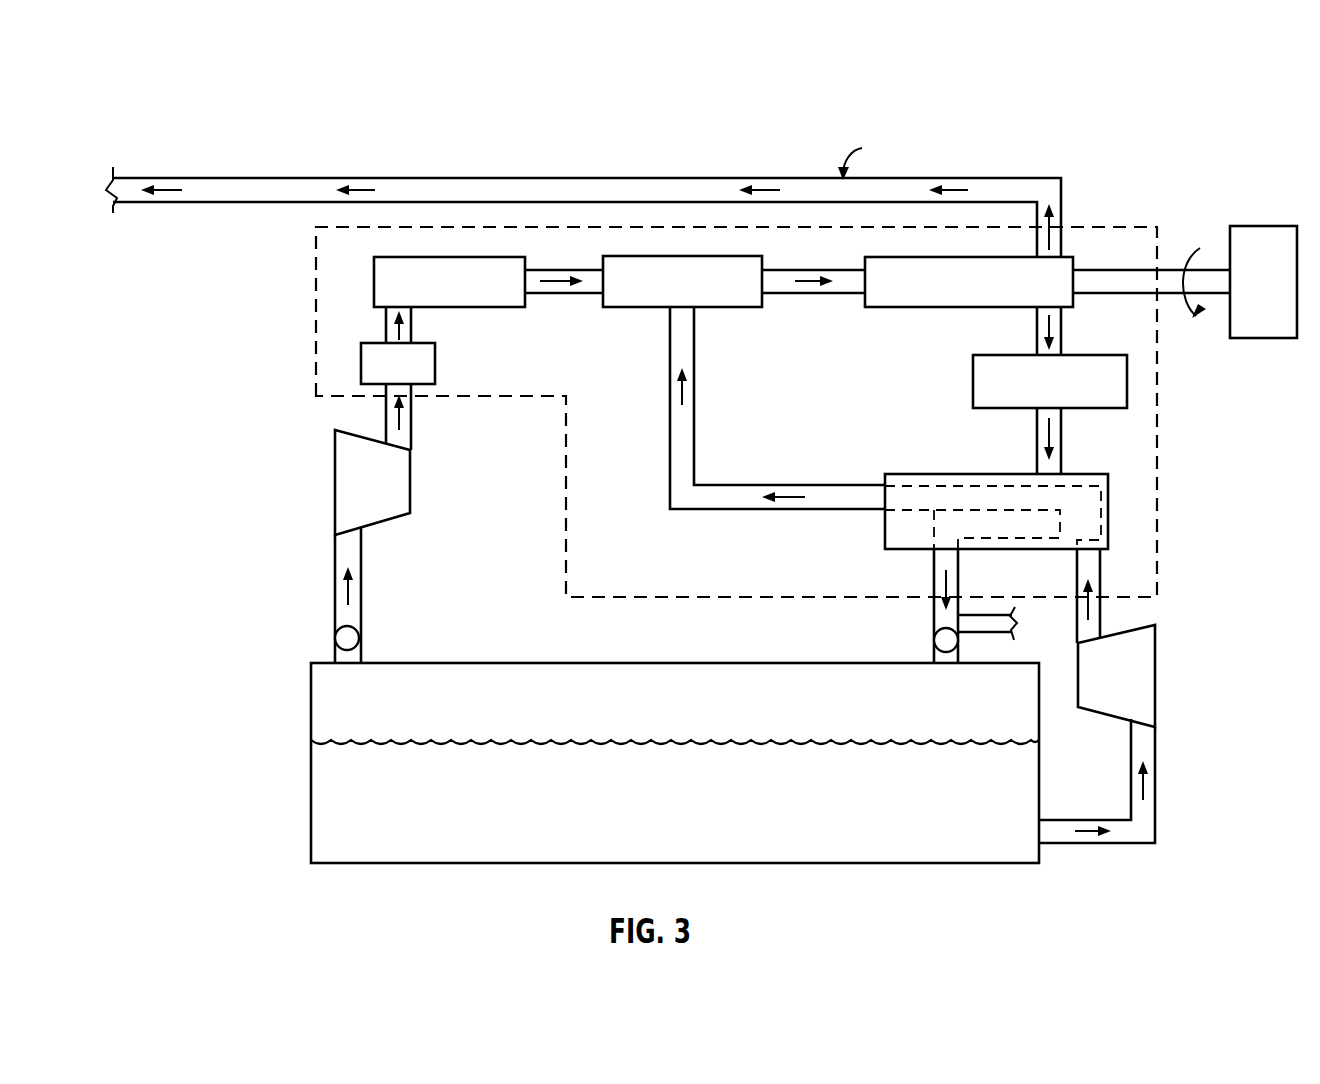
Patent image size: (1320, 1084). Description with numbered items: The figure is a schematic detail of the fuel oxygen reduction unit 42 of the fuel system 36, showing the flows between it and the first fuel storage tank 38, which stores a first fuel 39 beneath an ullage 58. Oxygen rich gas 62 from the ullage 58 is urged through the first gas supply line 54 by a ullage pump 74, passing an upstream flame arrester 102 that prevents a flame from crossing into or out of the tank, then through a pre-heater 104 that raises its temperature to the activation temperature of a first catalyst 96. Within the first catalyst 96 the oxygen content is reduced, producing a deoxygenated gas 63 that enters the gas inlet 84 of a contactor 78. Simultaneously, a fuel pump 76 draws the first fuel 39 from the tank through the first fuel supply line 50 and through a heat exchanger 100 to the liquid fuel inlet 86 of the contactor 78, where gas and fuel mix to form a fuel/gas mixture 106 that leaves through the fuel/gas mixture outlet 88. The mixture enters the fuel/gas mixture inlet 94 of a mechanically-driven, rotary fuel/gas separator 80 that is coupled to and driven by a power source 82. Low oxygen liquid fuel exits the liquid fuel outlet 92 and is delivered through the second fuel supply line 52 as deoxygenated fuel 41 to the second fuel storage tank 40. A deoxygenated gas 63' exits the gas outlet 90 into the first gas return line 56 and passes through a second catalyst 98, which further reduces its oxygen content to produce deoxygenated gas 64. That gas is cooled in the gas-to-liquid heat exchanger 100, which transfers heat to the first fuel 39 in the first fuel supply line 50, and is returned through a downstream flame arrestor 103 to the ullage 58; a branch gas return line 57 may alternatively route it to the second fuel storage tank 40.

The fuel system 36 is at (822, 90).
The first fuel storage tank 38 is at (860, 863).
The first fuel 39 is at (682, 395).
The second fuel storage tank 40 is at (167, 178).
The deoxygenated fuel 41 is at (360, 178).
The fuel oxygen reduction unit 42 is at (548, 218).
The first fuel supply line 50 is at (1155, 800).
The second fuel supply line 52 is at (658, 178).
The first gas supply line 54 is at (358, 560).
The first gas return line 56 is at (934, 565).
The branch gas return line 57 is at (990, 628).
The ullage 58 is at (484, 672).
The oxygen rich gas 62 is at (412, 328).
The deoxygenated gas 63 is at (564, 258).
The deoxygenated gas 63' is at (1014, 333).
The deoxygenated gas 64 is at (1040, 428).
The ullage pump 74 is at (335, 462).
The fuel pump 76 is at (1155, 677).
The contactor 78 is at (745, 256).
The fuel/gas separator 80 is at (905, 307).
The power source 82 is at (1279, 300).
The gas inlet 84 is at (594, 295).
The liquid fuel inlet 86 is at (684, 324).
The fuel/gas mixture outlet 88 is at (770, 298).
The gas outlet 90 is at (1064, 318).
The liquid fuel outlet 92 is at (1056, 238).
The fuel/gas mixture inlet 94 is at (859, 298).
The first catalyst 96 is at (437, 256).
The second catalyst 98 is at (1127, 372).
The heat exchanger 100 is at (1108, 498).
The upstream flame arrester 102 is at (362, 638).
The downstream flame arrestor 103 is at (936, 640).
The pre-heater 104 is at (361, 362).
The fuel/gas mixture 106 is at (798, 284).